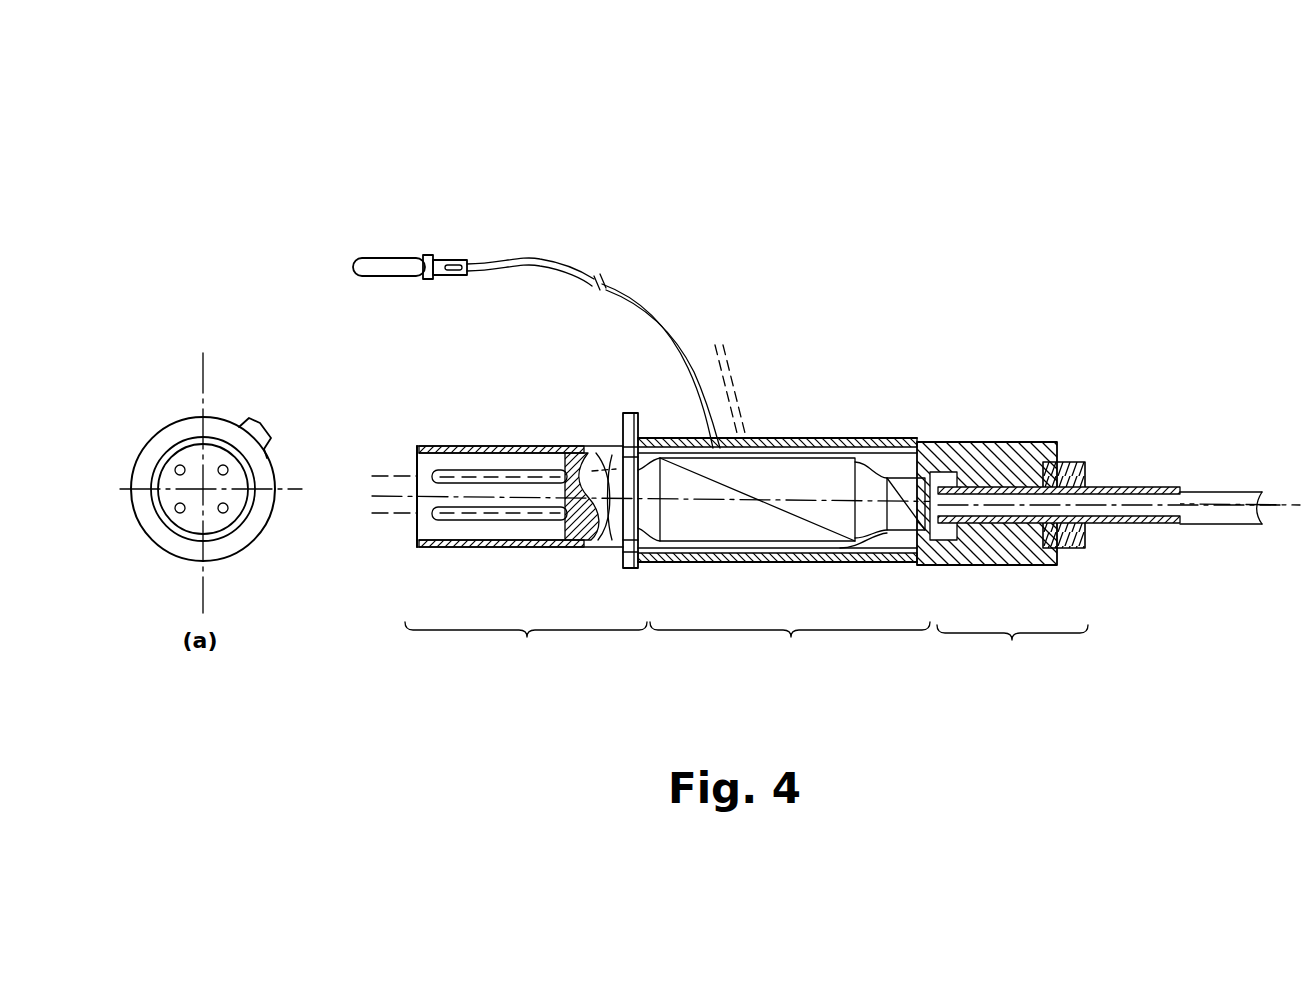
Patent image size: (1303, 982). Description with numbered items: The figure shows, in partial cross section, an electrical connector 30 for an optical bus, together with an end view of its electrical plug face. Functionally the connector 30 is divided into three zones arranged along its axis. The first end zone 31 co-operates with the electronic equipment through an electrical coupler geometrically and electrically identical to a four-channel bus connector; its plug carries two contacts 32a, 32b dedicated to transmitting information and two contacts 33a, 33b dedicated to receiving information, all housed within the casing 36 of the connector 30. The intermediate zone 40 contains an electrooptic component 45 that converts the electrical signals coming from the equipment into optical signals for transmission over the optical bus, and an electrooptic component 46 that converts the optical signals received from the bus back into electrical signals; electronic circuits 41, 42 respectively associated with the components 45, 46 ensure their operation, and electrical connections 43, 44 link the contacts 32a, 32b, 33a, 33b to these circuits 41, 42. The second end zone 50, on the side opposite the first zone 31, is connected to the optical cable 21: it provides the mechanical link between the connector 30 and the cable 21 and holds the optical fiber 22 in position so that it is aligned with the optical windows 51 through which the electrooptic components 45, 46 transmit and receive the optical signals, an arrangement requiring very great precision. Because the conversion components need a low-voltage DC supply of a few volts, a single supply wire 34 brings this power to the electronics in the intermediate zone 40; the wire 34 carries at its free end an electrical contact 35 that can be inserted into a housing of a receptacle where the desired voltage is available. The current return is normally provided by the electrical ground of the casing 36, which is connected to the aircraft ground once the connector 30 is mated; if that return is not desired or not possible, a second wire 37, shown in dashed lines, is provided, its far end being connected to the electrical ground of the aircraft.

The optical cable 21 is at (1140, 491).
The optical fiber 22 is at (1138, 524).
The connector 30 is at (933, 395).
The first end zone 31 is at (526, 558).
The contact 32a is at (180, 466).
The contact 32b is at (228, 508).
The contact 33a is at (223, 466).
The contact 33b is at (180, 513).
The supply wire 34 is at (653, 310).
The electrical contact 35 is at (397, 263).
The casing 36 is at (525, 548).
The second wire 37 is at (732, 392).
The intermediate zone 40 is at (784, 556).
The electronic circuit 41 is at (830, 462).
The electronic circuit 42 is at (697, 532).
The electrical connection 43 is at (612, 469).
The electrical connection 44 is at (607, 540).
The electrooptic component 45 is at (907, 487).
The electrooptic component 46 is at (902, 530).
The second end zone 50 is at (1002, 560).
The optical window 51 is at (934, 508).